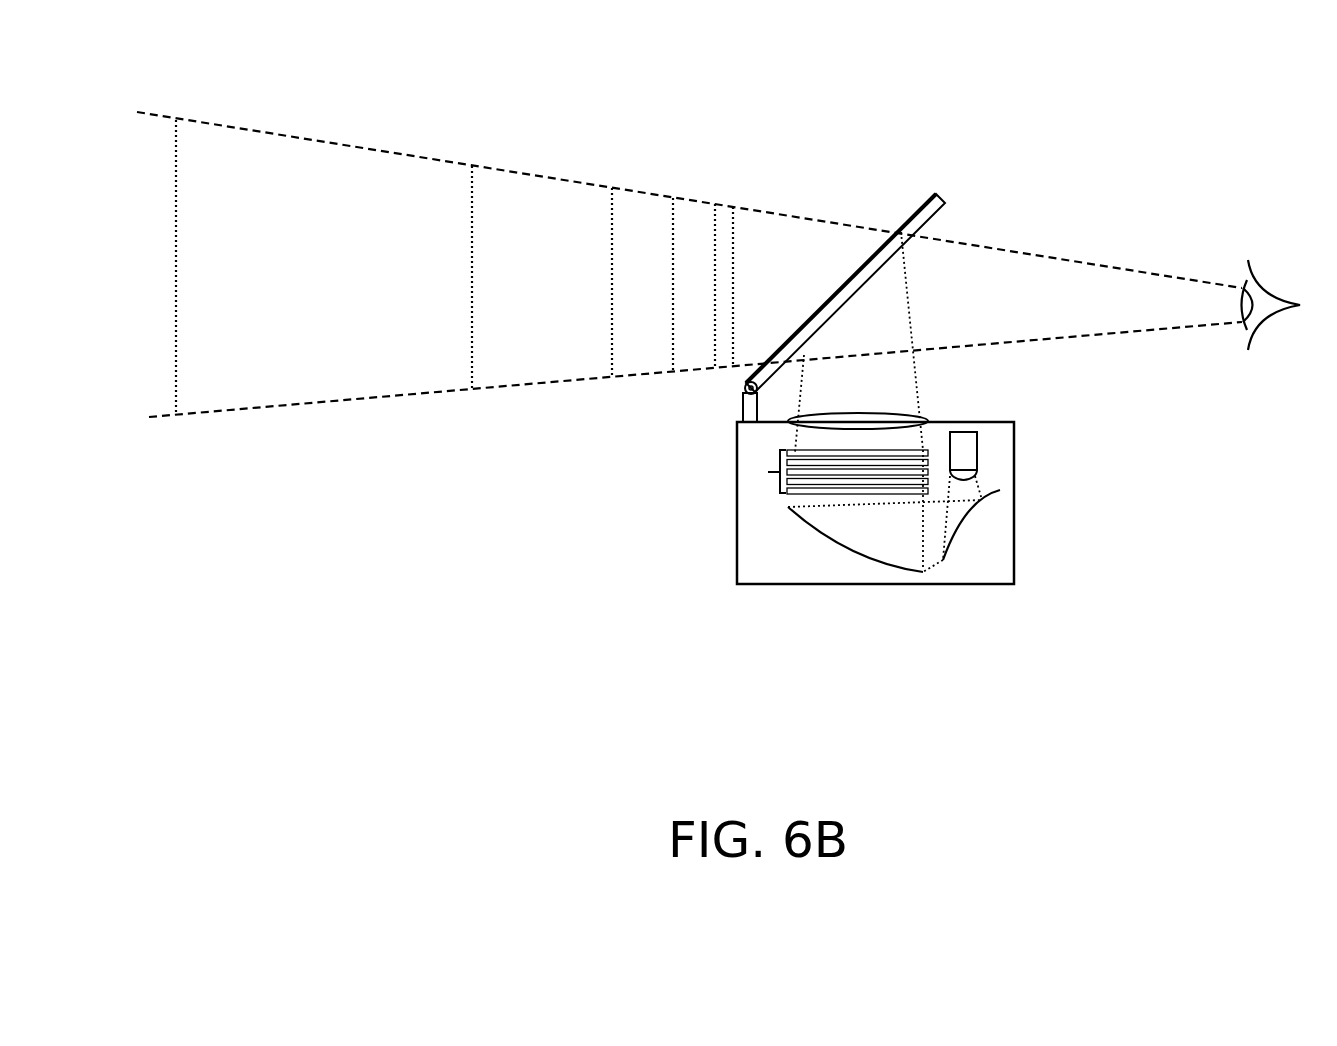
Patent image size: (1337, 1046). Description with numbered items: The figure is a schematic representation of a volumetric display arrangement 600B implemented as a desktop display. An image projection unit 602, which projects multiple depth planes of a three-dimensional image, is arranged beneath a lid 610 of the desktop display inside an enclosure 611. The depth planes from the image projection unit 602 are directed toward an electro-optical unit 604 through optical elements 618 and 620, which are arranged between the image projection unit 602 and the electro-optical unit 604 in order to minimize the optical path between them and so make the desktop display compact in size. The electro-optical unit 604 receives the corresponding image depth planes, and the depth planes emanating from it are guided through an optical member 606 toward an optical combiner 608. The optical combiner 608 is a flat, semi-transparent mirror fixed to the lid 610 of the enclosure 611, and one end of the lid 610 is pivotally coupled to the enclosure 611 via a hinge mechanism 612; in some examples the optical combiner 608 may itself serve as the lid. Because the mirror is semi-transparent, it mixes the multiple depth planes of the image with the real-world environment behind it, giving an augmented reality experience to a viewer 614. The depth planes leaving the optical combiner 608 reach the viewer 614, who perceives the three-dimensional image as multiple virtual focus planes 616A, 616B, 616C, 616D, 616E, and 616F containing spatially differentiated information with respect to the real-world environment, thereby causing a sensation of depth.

The volumetric display arrangement 600B is at (1229, 99).
The image projection unit 602 is at (1018, 478).
The electro-optical unit 604 is at (793, 490).
The optical member 606 is at (907, 405).
The optical combiner 608 is at (901, 293).
The lid 610 is at (869, 256).
The enclosure 611 is at (930, 503).
The hinge mechanism 612 is at (694, 409).
The viewer 614 is at (1271, 276).
The virtual focus plane 616A is at (786, 266).
The virtual focus plane 616B is at (768, 249).
The virtual focus plane 616C is at (664, 253).
The virtual focus plane 616D is at (568, 256).
The virtual focus plane 616E is at (416, 277).
The virtual focus plane 616F is at (246, 267).
The optical element 618 is at (1018, 534).
The optical element 620 is at (844, 579).